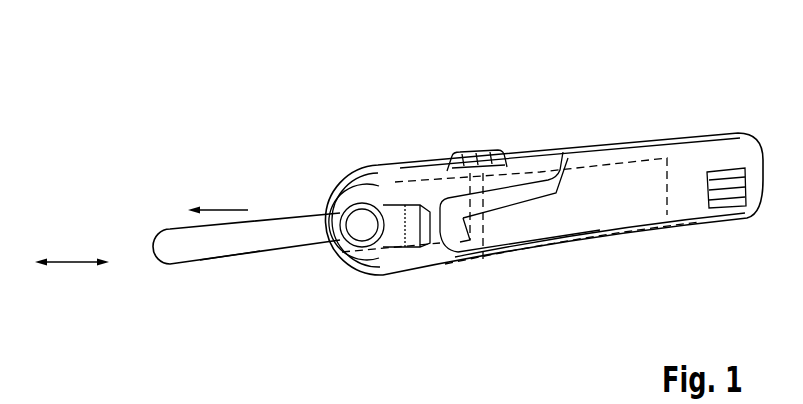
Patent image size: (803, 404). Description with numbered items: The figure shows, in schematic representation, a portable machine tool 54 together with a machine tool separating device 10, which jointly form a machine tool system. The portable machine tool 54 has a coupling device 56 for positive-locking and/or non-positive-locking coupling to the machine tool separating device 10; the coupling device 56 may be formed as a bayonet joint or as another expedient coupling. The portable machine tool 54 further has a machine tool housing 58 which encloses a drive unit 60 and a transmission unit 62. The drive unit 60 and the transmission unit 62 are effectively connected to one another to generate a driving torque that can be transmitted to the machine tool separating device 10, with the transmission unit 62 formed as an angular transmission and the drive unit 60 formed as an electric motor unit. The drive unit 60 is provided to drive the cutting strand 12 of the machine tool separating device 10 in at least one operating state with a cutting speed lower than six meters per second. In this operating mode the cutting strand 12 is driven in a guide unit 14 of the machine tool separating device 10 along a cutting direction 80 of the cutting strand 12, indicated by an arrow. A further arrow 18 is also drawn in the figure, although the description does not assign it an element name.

The machine tool separating device 10 is at (140, 160).
The cutting strand 12 is at (280, 218).
The guide unit 14 is at (228, 256).
The direction of movement 18 is at (68, 262).
The portable machine tool 54 is at (700, 91).
The coupling device 56 is at (345, 291).
The machine tool housing 58 is at (613, 150).
The drive unit 60 is at (604, 246).
The transmission unit 62 is at (452, 255).
The cutting direction 80 is at (220, 210).